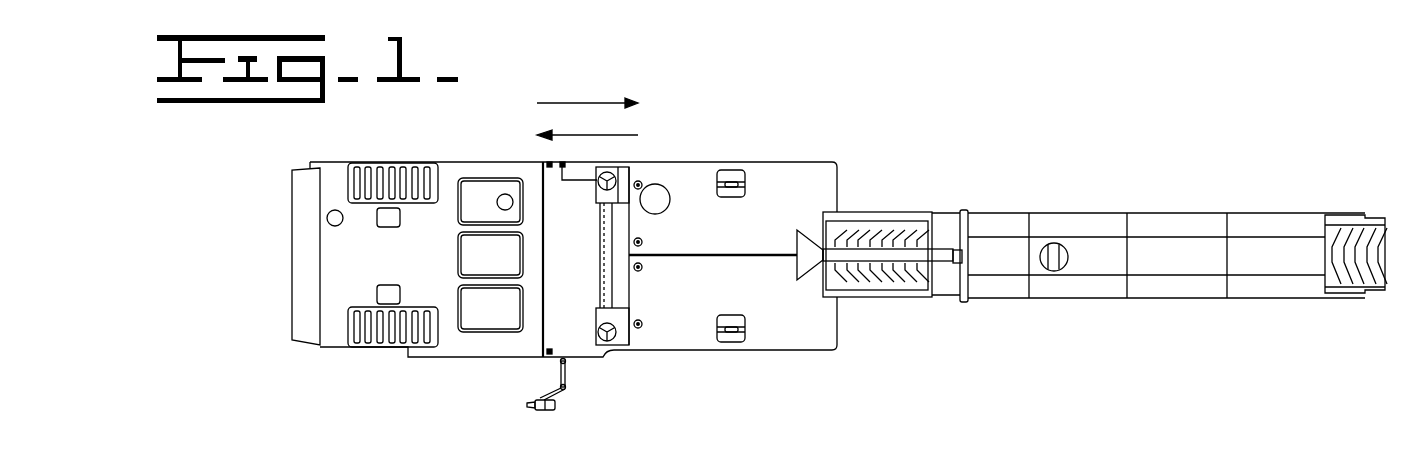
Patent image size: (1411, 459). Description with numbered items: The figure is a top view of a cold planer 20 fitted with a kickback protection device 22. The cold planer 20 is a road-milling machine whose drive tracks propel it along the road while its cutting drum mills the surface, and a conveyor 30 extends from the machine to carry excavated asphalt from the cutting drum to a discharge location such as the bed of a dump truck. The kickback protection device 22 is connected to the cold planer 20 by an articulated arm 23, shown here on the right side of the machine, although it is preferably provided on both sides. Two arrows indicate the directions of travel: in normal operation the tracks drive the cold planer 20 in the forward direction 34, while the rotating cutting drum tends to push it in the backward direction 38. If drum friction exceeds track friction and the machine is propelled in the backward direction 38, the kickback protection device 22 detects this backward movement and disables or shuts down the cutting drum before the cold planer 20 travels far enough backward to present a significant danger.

The cold planer 20 is at (955, 152).
The kickback protection device 22 is at (580, 415).
The articulated arm 23 is at (565, 377).
The conveyor 30 is at (1150, 213).
The forward direction 34 is at (600, 103).
The backward direction 38 is at (615, 135).